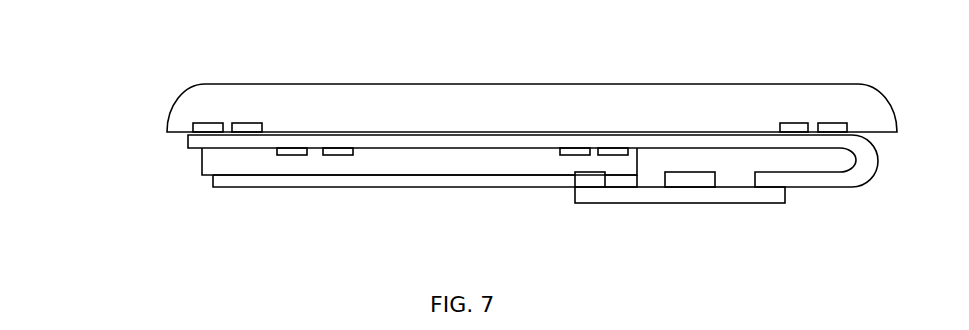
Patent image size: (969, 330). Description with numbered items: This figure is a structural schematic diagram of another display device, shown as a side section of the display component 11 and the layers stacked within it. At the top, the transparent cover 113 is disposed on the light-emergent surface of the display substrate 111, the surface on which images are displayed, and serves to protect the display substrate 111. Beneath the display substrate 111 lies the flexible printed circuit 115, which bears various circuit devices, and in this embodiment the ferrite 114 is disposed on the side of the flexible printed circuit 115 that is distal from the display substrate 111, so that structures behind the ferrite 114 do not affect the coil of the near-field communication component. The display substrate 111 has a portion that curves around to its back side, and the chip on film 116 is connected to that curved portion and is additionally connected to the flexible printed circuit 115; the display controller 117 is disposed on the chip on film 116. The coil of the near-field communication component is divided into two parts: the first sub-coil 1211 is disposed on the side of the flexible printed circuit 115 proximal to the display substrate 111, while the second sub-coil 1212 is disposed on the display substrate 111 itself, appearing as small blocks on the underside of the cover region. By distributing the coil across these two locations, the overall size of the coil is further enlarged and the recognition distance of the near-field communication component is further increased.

The display component 11 is at (100, 200).
The display substrate 111 is at (188, 141).
The transparent cover 113 is at (188, 88).
The ferrite 114 is at (213, 178).
The flexible printed circuit 115 is at (202, 163).
The chip on film 116 is at (602, 197).
The display controller 117 is at (682, 177).
The first sub-coil 1211 is at (293, 155).
The second sub-coil 1212 is at (245, 122).